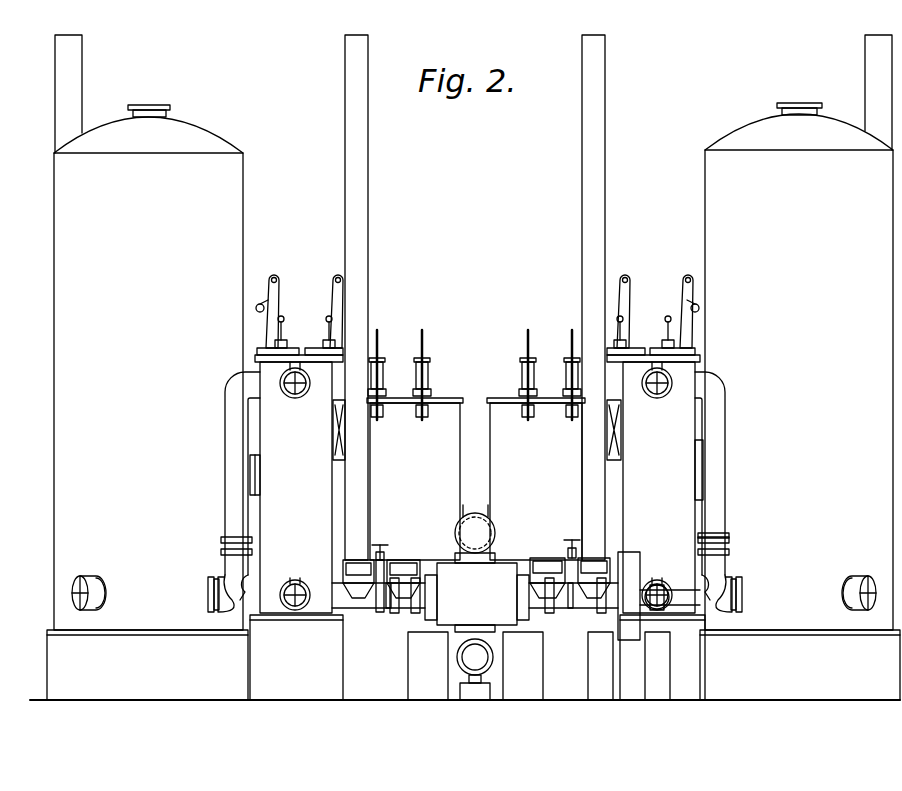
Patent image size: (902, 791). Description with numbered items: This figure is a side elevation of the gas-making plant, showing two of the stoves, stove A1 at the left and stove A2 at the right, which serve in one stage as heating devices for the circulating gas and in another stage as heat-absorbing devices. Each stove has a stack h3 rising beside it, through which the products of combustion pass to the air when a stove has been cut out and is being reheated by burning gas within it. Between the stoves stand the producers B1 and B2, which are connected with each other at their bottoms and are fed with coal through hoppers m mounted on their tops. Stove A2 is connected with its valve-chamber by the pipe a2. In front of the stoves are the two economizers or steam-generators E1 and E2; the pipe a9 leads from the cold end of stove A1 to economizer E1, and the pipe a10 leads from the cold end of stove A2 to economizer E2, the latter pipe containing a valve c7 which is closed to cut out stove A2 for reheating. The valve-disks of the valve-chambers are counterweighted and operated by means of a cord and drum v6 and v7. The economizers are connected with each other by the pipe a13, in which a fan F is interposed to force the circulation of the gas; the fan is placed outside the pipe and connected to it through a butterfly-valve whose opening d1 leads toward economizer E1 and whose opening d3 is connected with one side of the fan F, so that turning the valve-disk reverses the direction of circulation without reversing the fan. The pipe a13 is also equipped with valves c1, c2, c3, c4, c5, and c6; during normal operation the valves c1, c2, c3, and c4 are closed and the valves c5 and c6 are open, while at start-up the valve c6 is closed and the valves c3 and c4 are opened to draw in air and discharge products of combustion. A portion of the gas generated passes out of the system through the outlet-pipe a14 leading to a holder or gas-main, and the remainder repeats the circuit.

The stove A1 is at (147, 402).
The stove A2 is at (800, 401).
The stack h3 is at (82, 62).
The economizer E1 is at (297, 524).
The economizer E2 is at (656, 524).
The cord and drum v6 is at (281, 297).
The cord and drum v7 is at (256, 303).
The producer B1 is at (415, 479).
The producer B2 is at (536, 479).
The hopper m is at (414, 372).
The pipe a9 is at (225, 463).
The opening d1 is at (258, 480).
The pipe a10 is at (726, 452).
The pipe a2 is at (694, 445).
The valve c7 is at (729, 548).
The fan F is at (475, 626).
The opening d3 is at (475, 529).
The outlet-pipe a14 is at (457, 660).
The valve c1 is at (358, 564).
The valve c5 is at (380, 543).
The valve c2 is at (403, 565).
The pipe a13 is at (570, 612).
The valve c3 is at (547, 565).
The valve c6 is at (572, 538).
The valve c4 is at (594, 566).